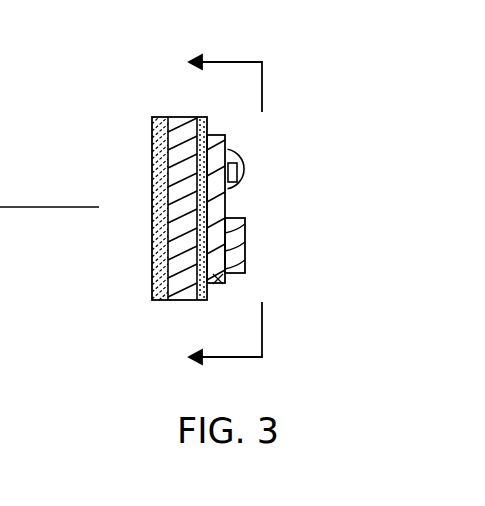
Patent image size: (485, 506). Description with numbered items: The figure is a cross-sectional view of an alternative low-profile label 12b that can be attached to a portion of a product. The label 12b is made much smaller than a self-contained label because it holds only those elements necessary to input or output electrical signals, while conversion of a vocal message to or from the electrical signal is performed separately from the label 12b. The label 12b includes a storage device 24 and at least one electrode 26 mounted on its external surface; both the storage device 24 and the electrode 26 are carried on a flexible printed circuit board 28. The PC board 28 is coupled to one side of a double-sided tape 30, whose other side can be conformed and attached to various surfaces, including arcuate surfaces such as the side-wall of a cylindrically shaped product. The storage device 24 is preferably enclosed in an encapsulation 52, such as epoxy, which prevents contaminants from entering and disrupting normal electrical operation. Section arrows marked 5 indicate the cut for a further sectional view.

The low-profile label 12b is at (90, 129).
The double-sided tape 30 is at (184, 296).
The flexible printed circuit board 28 is at (224, 282).
The encapsulation 52 is at (233, 151).
The storage device 24 is at (236, 182).
The electrode 26 is at (244, 246).
The section line 5- 5 is at (215, 208).